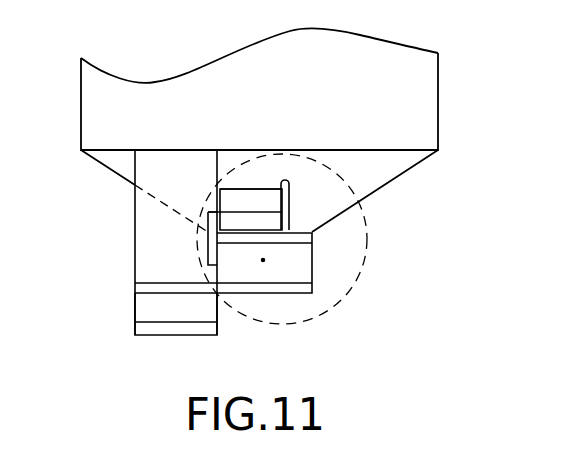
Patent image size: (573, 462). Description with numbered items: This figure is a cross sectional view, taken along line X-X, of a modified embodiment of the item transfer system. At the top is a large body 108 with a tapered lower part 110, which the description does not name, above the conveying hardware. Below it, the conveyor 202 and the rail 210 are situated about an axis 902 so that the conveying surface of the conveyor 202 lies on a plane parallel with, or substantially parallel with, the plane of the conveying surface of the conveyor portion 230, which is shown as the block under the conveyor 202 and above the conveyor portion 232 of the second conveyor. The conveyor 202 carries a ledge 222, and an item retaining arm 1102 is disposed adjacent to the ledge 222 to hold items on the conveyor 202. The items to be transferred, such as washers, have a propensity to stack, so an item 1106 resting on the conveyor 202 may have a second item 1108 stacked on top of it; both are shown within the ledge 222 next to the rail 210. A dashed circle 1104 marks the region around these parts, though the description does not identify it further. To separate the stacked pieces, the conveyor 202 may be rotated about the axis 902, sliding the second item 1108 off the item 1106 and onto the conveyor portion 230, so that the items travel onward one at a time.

The blade body 108 is at (438, 95).
The tapered portion 110 is at (410, 172).
The conveyor 202 is at (312, 258).
The rail 210 is at (290, 205).
The ledge 222 is at (222, 228).
The conveyor portion 230 is at (135, 305).
The conveyor portion 232 is at (135, 250).
The axis 902 is at (263, 262).
The item retaining arm 1102 is at (197, 247).
The detail region 1104 is at (367, 232).
The item 1106 is at (262, 221).
The second item 1108 is at (263, 190).